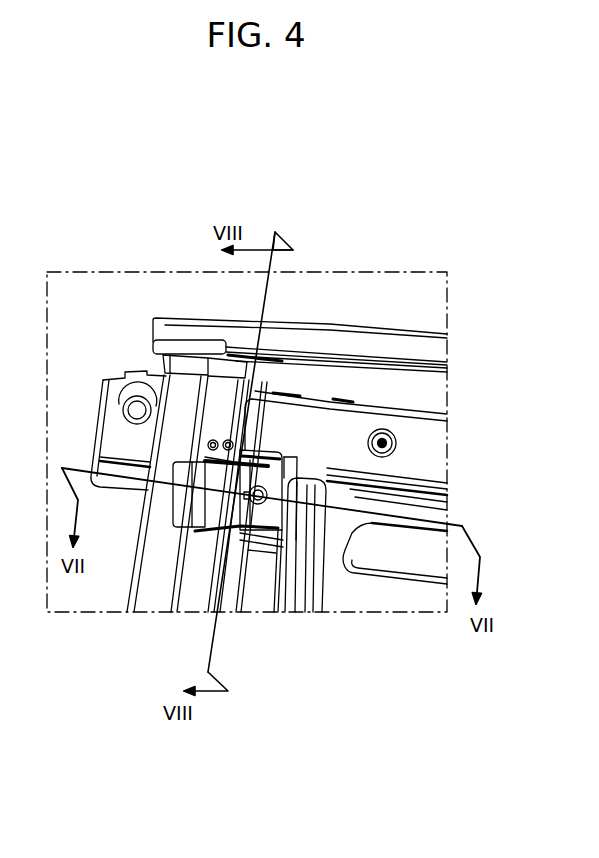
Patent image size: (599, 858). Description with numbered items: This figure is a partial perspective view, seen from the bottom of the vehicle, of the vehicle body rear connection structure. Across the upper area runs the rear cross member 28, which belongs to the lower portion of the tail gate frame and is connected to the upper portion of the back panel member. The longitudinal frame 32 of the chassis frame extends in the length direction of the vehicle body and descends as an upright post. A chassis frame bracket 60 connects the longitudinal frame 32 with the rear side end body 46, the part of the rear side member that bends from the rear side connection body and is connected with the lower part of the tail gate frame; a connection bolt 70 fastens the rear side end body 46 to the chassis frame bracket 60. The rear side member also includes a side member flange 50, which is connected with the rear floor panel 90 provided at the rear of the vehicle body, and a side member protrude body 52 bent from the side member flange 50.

The rear cross member 28 is at (430, 441).
The longitudinal frame 32 is at (149, 612).
The rear side end body 46 is at (298, 617).
The side member flange 50 is at (313, 573).
The side member protrude body 52 is at (262, 600).
The chassis frame bracket 60 is at (208, 544).
The connection bolt 70 is at (259, 488).
The rear floor panel 90 is at (418, 560).